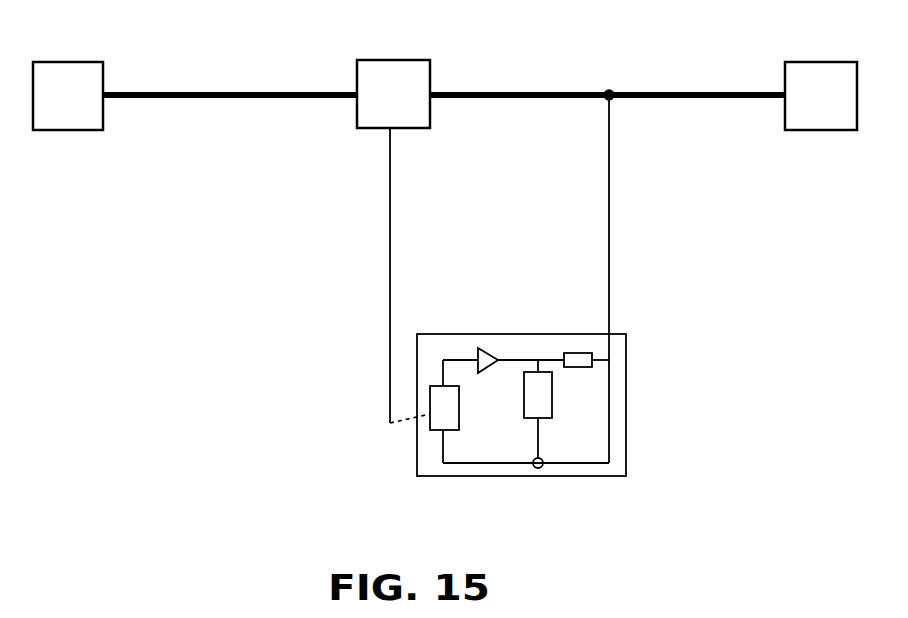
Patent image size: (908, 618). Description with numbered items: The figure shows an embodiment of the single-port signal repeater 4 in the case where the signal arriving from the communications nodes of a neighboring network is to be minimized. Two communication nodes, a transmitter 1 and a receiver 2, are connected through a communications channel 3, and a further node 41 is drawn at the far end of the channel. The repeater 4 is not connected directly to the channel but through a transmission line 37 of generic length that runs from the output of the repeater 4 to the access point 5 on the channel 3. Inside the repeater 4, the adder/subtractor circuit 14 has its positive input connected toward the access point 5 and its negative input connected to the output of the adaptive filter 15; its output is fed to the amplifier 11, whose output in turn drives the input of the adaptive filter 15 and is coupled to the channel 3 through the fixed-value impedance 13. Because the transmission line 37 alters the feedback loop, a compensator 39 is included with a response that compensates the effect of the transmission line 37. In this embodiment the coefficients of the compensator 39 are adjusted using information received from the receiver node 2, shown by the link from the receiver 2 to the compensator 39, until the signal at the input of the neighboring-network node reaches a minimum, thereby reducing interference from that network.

The transmitter 1 is at (68, 96).
The receiver 2 is at (393, 94).
The communications channel 3 is at (110, 60).
The single-port signal repeater 4 is at (508, 302).
The access point 5 is at (609, 84).
The amplifier 11 is at (491, 353).
The fixed-value impedance 13 is at (578, 351).
The adder/subtractor circuit 14 is at (526, 456).
The adaptive filter 15 is at (538, 395).
The transmission line 37 is at (585, 107).
The compensator 39 is at (470, 406).
The second terminal device 41 is at (821, 96).